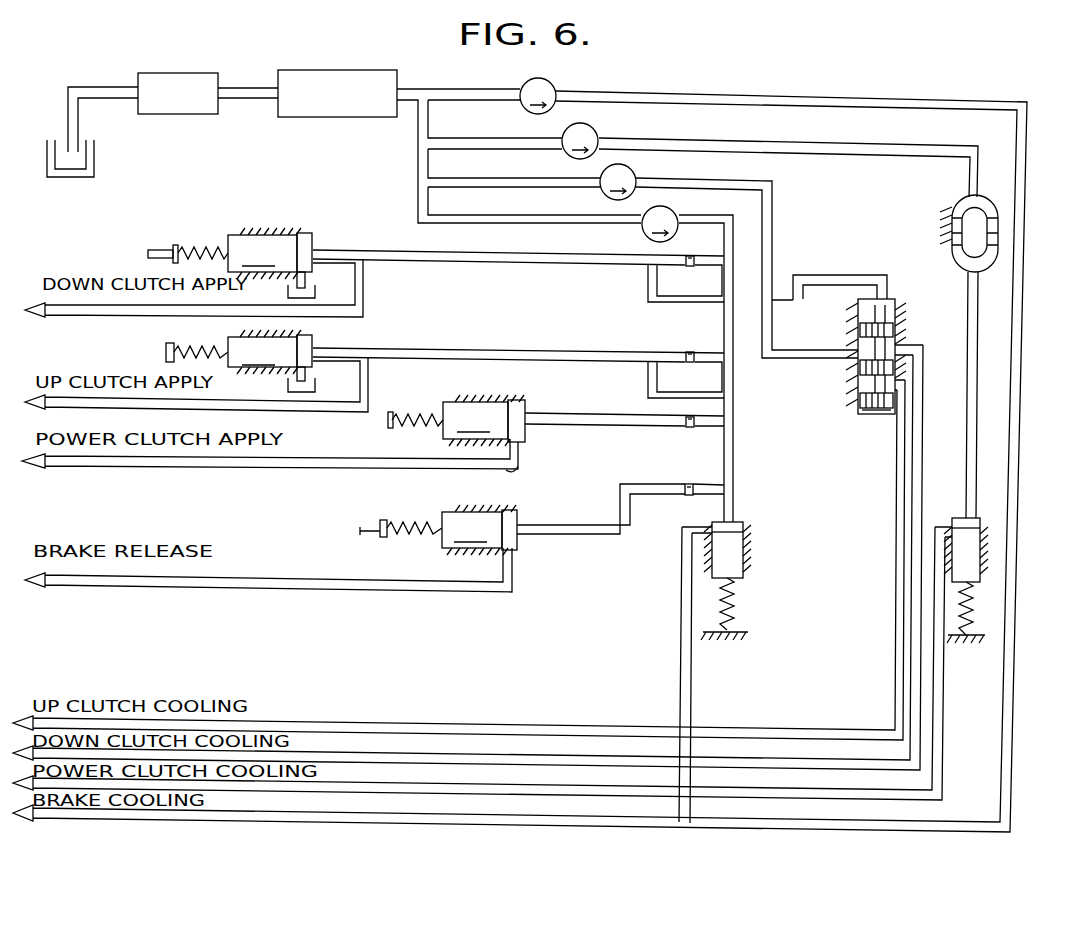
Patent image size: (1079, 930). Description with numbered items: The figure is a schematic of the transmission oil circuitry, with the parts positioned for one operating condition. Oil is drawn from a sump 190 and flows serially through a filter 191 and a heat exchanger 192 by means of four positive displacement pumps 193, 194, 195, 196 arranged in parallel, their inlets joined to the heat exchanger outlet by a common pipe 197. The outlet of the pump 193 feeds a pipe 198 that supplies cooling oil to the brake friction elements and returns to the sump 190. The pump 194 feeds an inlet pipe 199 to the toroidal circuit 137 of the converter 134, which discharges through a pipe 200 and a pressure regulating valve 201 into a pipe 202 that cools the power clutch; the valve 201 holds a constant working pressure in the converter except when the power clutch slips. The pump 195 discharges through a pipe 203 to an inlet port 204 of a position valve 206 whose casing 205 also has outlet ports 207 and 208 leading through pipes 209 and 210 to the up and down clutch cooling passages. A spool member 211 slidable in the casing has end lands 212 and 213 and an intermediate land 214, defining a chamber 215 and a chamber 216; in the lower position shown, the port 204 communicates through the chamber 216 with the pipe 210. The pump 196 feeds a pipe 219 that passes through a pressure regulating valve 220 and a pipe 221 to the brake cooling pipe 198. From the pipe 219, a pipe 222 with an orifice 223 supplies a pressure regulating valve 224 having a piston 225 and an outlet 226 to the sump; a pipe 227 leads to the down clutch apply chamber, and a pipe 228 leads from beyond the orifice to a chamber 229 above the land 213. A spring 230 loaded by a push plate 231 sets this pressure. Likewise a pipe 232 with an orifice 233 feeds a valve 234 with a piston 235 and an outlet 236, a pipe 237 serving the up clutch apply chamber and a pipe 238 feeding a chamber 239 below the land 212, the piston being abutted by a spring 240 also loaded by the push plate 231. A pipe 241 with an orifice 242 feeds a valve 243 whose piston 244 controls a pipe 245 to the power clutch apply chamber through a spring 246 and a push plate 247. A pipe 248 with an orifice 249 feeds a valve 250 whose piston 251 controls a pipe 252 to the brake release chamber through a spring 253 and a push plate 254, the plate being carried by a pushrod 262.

The converter 134 is at (952, 194).
The toroidal circuit 137 is at (940, 209).
The sump 190 is at (73, 177).
The filter 191 is at (173, 117).
The heat exchanger 192 is at (328, 118).
The pump 193 is at (557, 90).
The pump 194 is at (598, 132).
The pump 195 is at (637, 177).
The pump 196 is at (678, 218).
The common pipe 197 is at (420, 130).
The pipe 198 is at (936, 100).
The inlet pipe 199 is at (866, 146).
The pipe 200 is at (972, 400).
The pressure regulating valve 201 is at (982, 540).
The pipe 202 is at (937, 693).
The pipe 203 is at (708, 188).
The inlet port 204 is at (858, 357).
The casing 205 is at (856, 351).
The position valve 206 is at (904, 293).
The outlet port 207 is at (906, 388).
The outlet port 208 is at (903, 344).
The pipe 209 is at (898, 506).
The pipe 210 is at (927, 449).
The spool member 211 is at (897, 315).
The end land 212 is at (887, 402).
The end land 213 is at (898, 340).
The intermediate land 214 is at (897, 364).
The chamber 215 is at (862, 388).
The chamber 216 is at (858, 340).
The pipe 219 is at (733, 453).
The pressure regulating valve 220 is at (745, 542).
The pipe 221 is at (680, 654).
The pipe 222 is at (588, 260).
The orifice 223 is at (689, 280).
The pressure regulating valve 224 is at (255, 228).
The piston 225 is at (270, 252).
The outlet 226 is at (306, 281).
The pipe 227 is at (364, 300).
The pipe 228 is at (699, 304).
The chamber 229 is at (870, 311).
The spring 230 is at (200, 247).
The push plate 231 is at (172, 243).
The pipe 232 is at (556, 348).
The orifice 233 is at (689, 377).
The pressure regulating valve 234 is at (242, 331).
The piston 235 is at (270, 351).
The outlet 236 is at (306, 376).
The pipe 237 is at (368, 390).
The pipe 238 is at (648, 382).
The chamber 239 is at (862, 412).
The spring 240 is at (180, 342).
The pipe 241 is at (633, 425).
The orifice 242 is at (685, 428).
The pressure regulating valve 243 is at (454, 399).
The piston 244 is at (484, 421).
The pipe 245 is at (515, 472).
The spring 246 is at (430, 430).
The push plate 247 is at (388, 428).
The pipe 248 is at (610, 536).
The orifice 249 is at (688, 497).
The pressure regulating valve 250 is at (458, 508).
The piston 251 is at (479, 530).
The pipe 252 is at (487, 592).
The spring 253 is at (415, 538).
The push plate 254 is at (383, 538).
The pushrod 262 is at (366, 531).